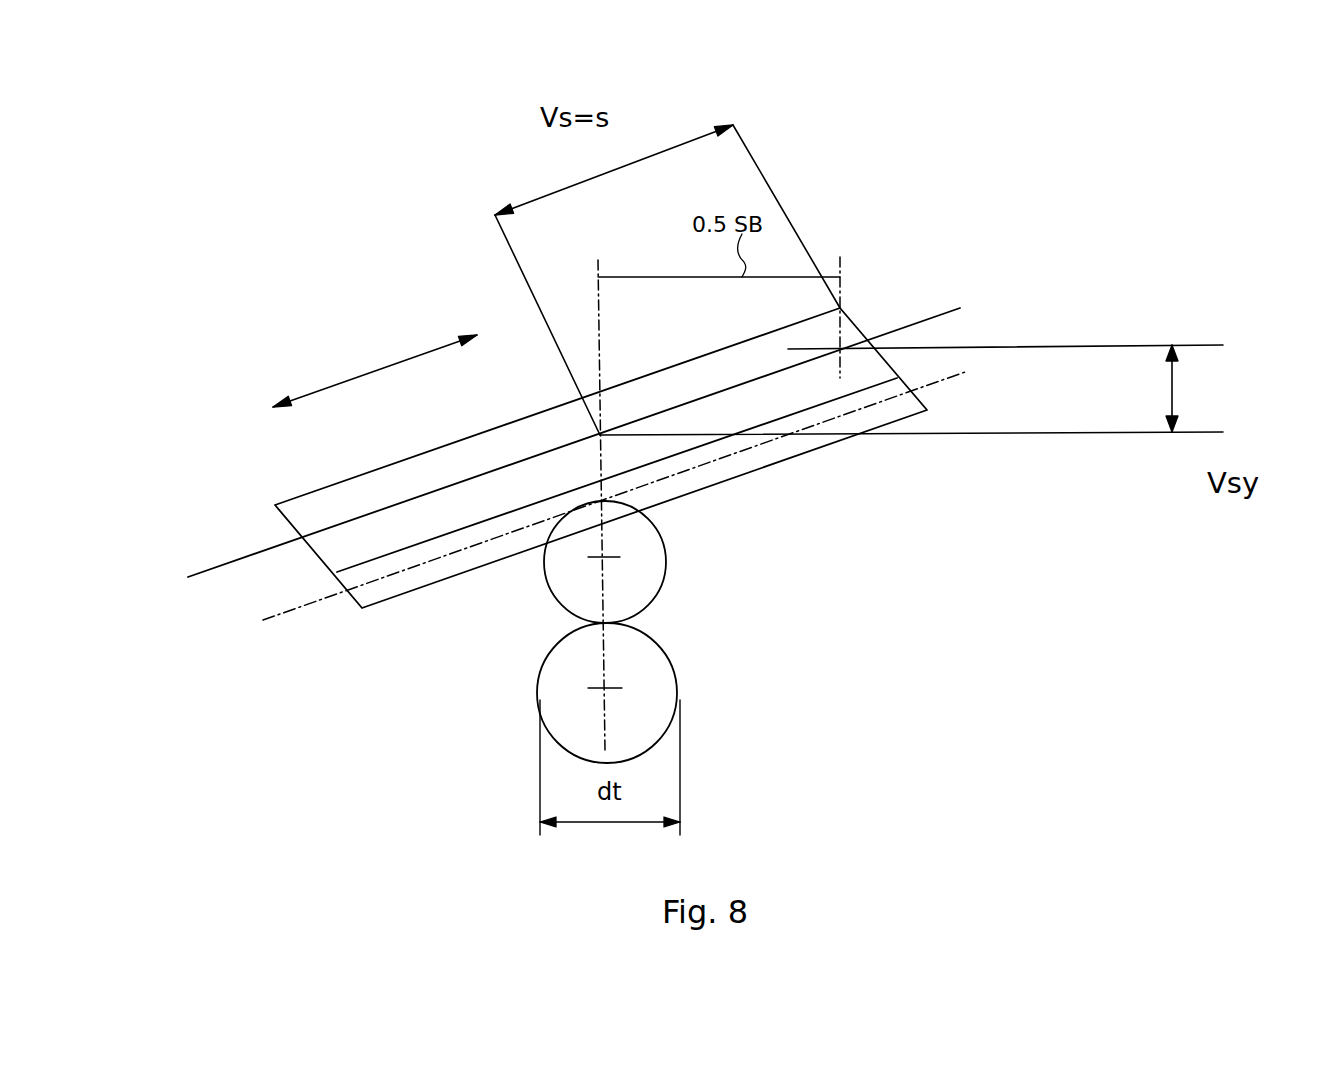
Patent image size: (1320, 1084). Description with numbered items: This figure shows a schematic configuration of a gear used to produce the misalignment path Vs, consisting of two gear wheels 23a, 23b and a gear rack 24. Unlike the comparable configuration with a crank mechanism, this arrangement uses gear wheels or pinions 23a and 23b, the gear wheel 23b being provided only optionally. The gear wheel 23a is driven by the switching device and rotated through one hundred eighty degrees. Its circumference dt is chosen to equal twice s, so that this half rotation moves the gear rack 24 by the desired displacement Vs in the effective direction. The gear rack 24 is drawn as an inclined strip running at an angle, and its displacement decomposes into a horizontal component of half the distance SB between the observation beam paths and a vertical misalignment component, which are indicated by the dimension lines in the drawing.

The gear rack 24 is at (343, 545).
The gear wheel 23a is at (658, 712).
The gear wheel 23b is at (637, 563).